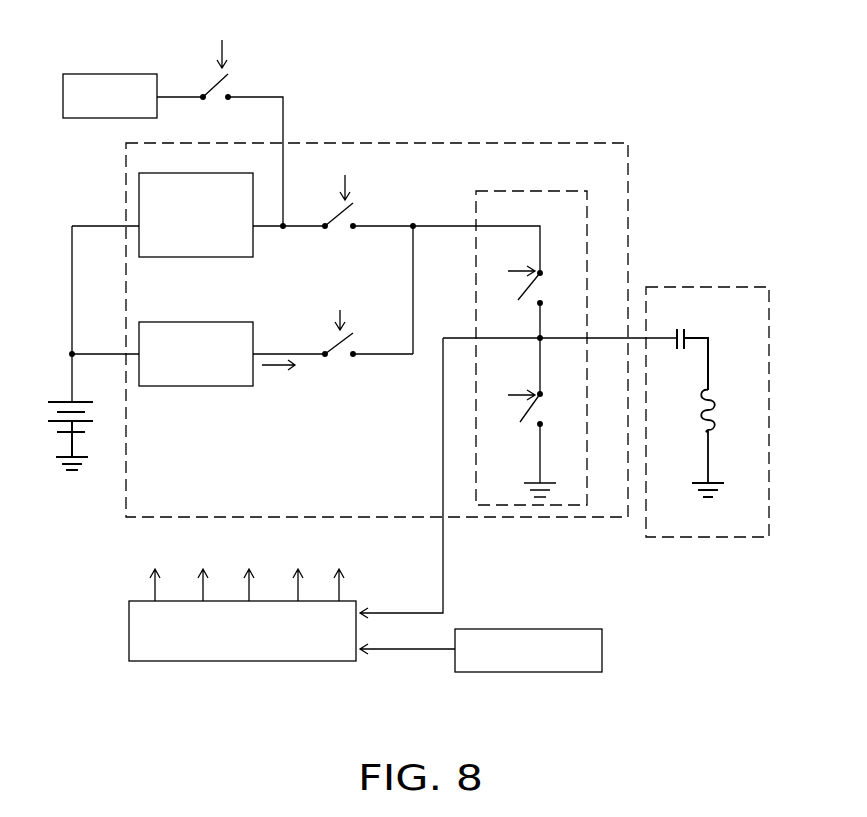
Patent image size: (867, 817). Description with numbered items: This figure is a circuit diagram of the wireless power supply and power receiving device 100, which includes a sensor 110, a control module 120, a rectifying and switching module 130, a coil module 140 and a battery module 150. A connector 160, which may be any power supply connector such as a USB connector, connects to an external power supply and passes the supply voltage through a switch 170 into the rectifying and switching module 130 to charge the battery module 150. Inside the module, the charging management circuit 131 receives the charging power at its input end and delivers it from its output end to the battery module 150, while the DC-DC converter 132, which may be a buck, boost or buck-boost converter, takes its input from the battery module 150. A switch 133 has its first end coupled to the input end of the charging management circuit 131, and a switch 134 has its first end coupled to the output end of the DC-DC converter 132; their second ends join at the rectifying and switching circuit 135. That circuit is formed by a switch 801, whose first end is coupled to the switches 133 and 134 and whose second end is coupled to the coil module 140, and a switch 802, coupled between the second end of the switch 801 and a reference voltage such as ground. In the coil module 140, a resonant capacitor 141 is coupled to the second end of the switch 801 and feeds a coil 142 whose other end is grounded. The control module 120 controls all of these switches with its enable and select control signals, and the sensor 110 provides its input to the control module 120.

The wireless power supply and power receiving device 100 is at (500, 697).
The sensor 110 is at (602, 650).
The control module 120 is at (225, 662).
The rectifying and switching module 130 is at (398, 143).
The charging management circuit 131 is at (185, 258).
The DC-DC converter 132 is at (182, 388).
The switch 133 is at (338, 232).
The switch 134 is at (338, 358).
The rectifying and switching circuit 135 is at (530, 190).
The coil module 140 is at (700, 540).
The resonant capacitor 141 is at (680, 328).
The coil 142 is at (712, 412).
The battery module 150 is at (93, 412).
The connector 160 is at (112, 72).
The switch 170 is at (213, 102).
The switch 801 is at (545, 290).
The switch 802 is at (545, 412).